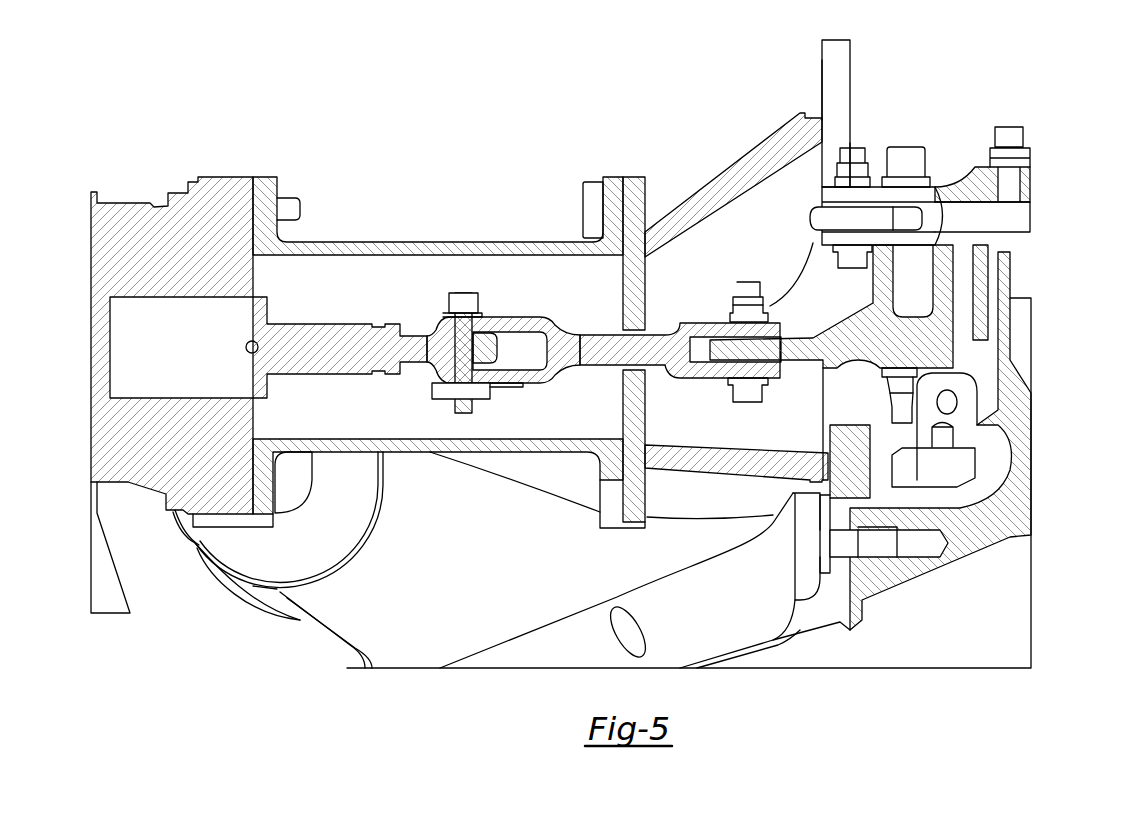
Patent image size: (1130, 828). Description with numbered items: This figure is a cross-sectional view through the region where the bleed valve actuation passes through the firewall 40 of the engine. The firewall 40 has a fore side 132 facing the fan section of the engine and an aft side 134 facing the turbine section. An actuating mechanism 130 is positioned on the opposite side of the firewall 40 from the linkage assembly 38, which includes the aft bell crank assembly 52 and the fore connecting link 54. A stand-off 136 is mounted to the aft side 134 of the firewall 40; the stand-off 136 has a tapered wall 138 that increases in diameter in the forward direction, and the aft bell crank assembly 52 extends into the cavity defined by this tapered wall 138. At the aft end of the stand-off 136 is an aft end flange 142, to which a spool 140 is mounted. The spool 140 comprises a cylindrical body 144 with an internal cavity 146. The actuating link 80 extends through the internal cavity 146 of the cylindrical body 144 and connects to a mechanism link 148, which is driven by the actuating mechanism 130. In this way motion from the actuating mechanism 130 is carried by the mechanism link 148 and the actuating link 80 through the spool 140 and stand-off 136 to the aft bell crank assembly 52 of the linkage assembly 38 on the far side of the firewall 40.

The actuating mechanism 130 is at (156, 188).
The cylindrical body 144 is at (357, 243).
The internal cavity 146 is at (410, 273).
The spool 140 is at (545, 238).
The aft end flange 142 is at (643, 208).
The tapered wall 138 is at (726, 175).
The stand-off 136 is at (700, 470).
The mechanism link 148 is at (330, 373).
The actuating link 80 is at (593, 372).
The aft bell crank assembly 52 is at (925, 287).
The fore connecting link 54 is at (1030, 214).
The firewall 40 is at (840, 62).
The fore side 132 is at (850, 87).
The aft side 134 is at (822, 75).
The linkage assembly 38 is at (906, 143).